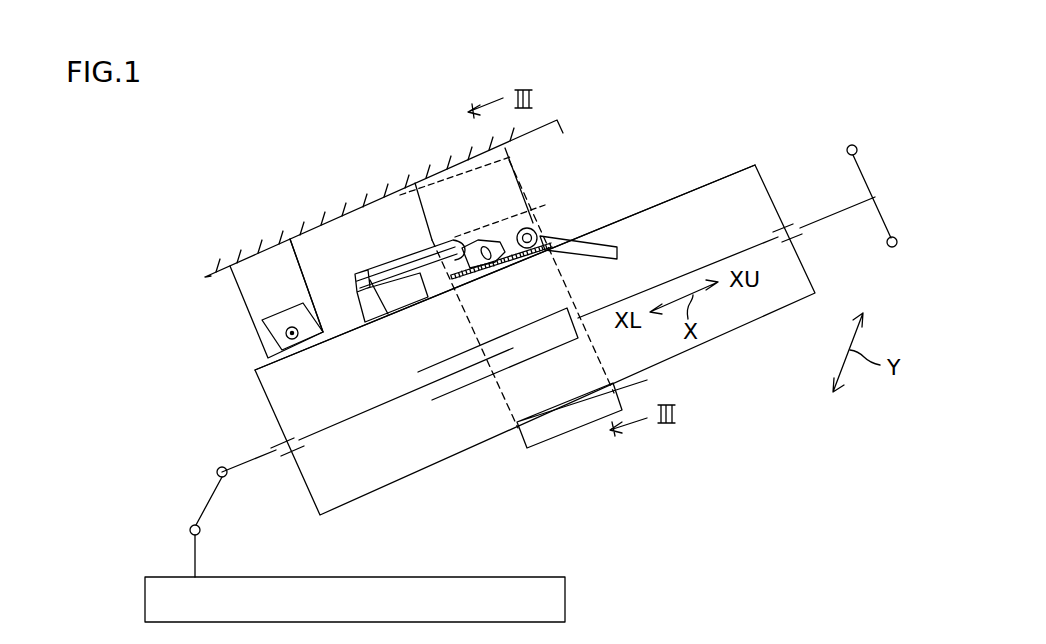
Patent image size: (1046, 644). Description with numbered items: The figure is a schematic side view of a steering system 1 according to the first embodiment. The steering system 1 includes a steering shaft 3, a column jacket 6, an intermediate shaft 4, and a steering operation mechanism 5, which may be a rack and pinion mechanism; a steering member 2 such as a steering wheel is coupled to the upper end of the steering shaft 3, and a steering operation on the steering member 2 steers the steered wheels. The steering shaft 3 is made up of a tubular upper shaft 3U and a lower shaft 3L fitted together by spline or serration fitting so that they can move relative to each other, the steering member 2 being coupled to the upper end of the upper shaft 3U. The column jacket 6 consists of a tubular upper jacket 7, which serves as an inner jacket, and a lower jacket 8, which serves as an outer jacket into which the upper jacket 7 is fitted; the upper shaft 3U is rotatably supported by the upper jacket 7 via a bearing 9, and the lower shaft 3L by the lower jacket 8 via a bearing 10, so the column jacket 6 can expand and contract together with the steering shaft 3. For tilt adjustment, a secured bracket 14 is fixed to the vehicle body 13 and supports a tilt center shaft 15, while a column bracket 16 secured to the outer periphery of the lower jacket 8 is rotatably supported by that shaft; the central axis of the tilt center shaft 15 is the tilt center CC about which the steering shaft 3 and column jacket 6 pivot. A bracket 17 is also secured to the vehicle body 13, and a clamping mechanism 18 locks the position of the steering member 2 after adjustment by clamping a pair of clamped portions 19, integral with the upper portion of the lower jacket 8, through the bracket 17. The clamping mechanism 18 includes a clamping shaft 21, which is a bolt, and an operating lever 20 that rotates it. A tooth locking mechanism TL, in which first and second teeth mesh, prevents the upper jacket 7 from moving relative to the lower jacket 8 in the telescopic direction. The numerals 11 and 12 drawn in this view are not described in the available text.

The steering system 1 is at (775, 132).
The steering member 2 is at (862, 170).
The steering shaft 3 is at (822, 216).
The upper shaft 3U is at (735, 248).
The lower shaft 3L is at (359, 415).
The intermediate shaft 4 is at (208, 499).
The steering operation mechanism 5 is at (566, 600).
The column jacket 6 is at (765, 316).
The upper jacket 7 is at (720, 338).
The lower jacket 8 is at (355, 502).
The bearing 9 is at (790, 225).
The bearing 10 is at (278, 441).
The column unit 11 is at (700, 177).
The fixed bracket 12 is at (298, 262).
The vehicle body 13 is at (335, 212).
The secured bracket 14 is at (233, 288).
The tilt center shaft 15 is at (285, 334).
The column bracket 16 is at (282, 319).
The bracket 17 is at (517, 168).
The clamping mechanism 18 is at (557, 228).
The clamped portions 19 is at (535, 224).
The operating lever 20 is at (617, 254).
The clamping shaft 21 is at (515, 228).
The tooth locking mechanism TL is at (488, 237).
The tilt center CC is at (293, 340).